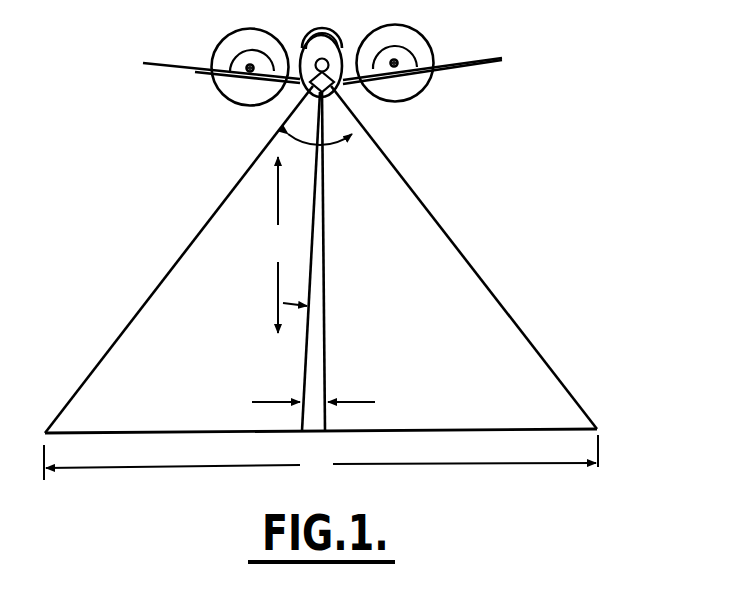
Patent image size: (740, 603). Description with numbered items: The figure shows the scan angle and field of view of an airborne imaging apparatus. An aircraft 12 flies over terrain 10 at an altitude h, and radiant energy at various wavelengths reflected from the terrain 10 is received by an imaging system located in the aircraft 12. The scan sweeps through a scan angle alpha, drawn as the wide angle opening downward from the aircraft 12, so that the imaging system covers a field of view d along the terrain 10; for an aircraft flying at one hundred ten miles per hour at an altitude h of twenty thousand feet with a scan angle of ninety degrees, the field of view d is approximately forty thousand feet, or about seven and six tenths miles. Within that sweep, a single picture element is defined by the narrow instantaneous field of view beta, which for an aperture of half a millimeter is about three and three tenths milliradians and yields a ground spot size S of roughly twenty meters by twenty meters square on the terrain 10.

The terrain 10 is at (170, 432).
The aircraft 12 is at (447, 68).
The altitude h is at (277, 245).
The field of view d is at (321, 457).
The ground spot size S is at (325, 402).
The scan angle alpha is at (345, 136).
The instantaneous field of view beta is at (327, 305).